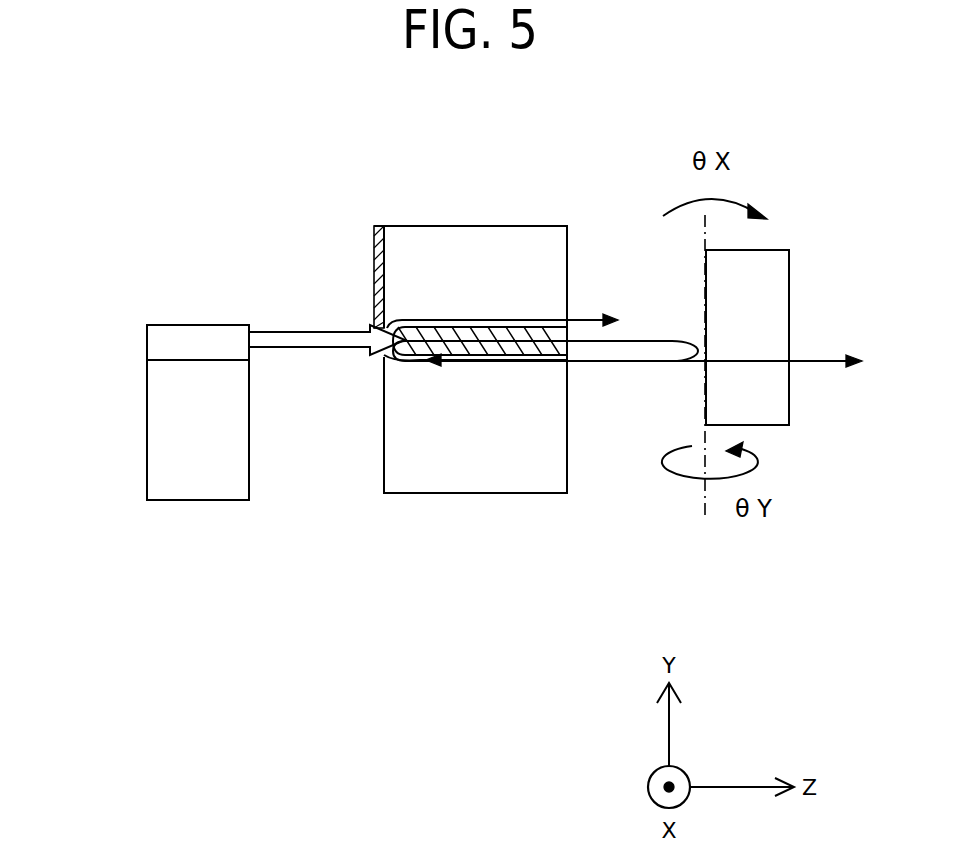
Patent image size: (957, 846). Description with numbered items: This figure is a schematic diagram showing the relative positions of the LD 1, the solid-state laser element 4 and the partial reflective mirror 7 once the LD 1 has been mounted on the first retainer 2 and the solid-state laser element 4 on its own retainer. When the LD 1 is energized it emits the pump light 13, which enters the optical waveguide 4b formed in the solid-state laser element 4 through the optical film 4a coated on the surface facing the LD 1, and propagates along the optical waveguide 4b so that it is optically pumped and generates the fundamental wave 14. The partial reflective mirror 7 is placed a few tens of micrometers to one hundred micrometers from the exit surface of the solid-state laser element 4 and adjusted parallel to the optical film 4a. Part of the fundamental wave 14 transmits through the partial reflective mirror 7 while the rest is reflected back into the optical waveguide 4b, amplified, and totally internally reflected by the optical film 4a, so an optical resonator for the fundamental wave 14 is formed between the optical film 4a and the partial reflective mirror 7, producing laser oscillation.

The LD 1 is at (175, 347).
The first retainer 2 is at (203, 458).
The solid-state laser element 4 is at (423, 245).
The optical film 4a is at (375, 253).
The optical waveguide 4b is at (447, 340).
The partial reflective mirror 7 is at (764, 307).
The pump light 13 is at (310, 343).
The fundamental wave 14 is at (597, 357).